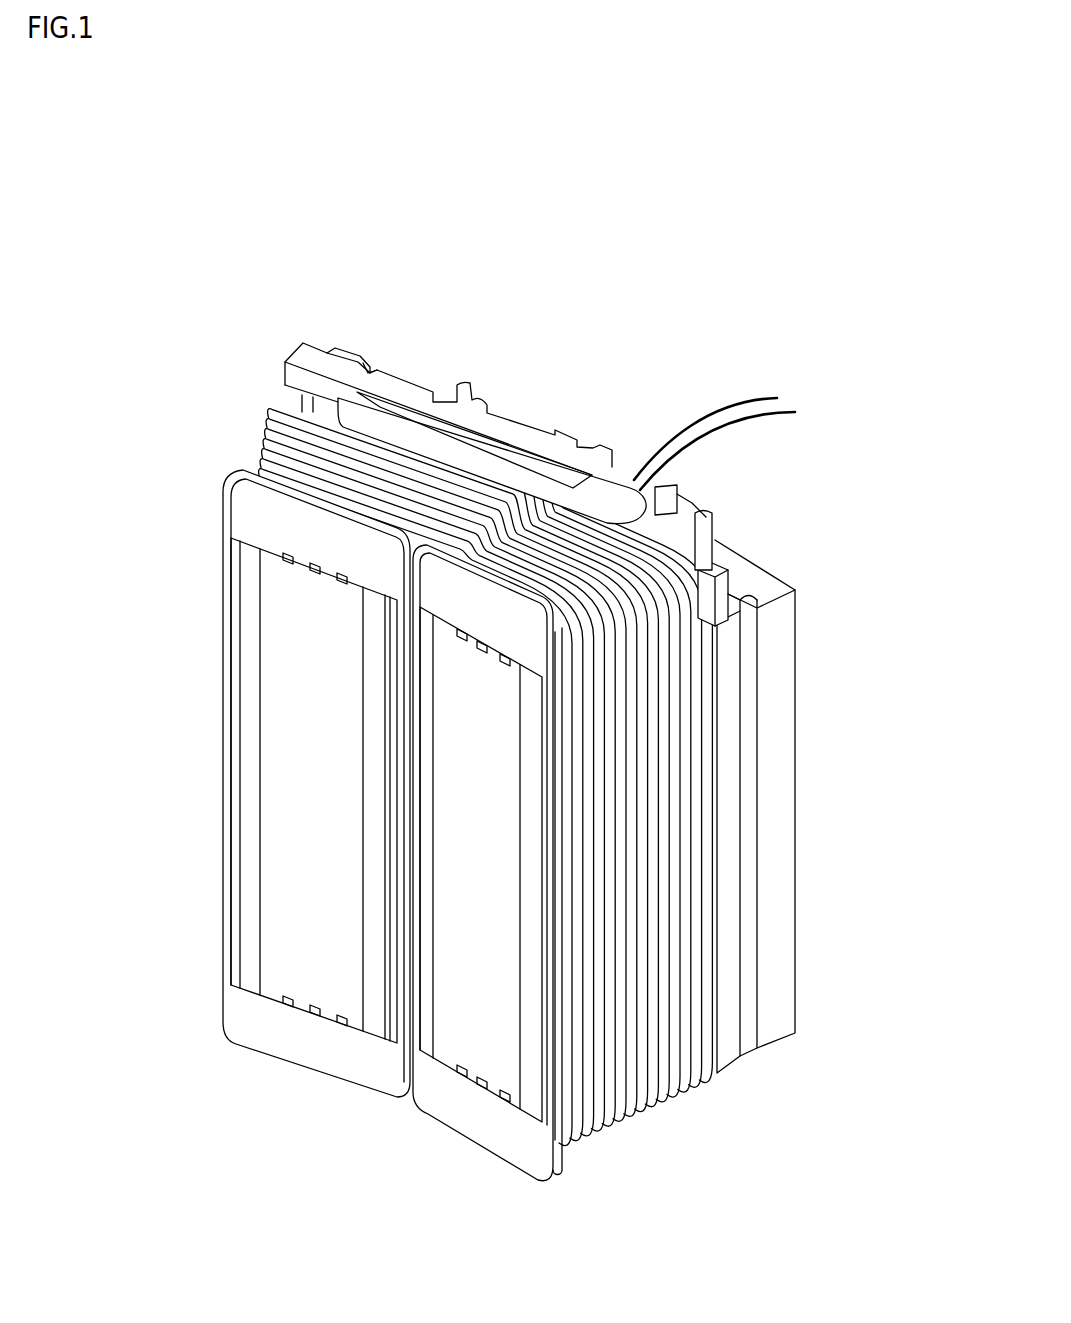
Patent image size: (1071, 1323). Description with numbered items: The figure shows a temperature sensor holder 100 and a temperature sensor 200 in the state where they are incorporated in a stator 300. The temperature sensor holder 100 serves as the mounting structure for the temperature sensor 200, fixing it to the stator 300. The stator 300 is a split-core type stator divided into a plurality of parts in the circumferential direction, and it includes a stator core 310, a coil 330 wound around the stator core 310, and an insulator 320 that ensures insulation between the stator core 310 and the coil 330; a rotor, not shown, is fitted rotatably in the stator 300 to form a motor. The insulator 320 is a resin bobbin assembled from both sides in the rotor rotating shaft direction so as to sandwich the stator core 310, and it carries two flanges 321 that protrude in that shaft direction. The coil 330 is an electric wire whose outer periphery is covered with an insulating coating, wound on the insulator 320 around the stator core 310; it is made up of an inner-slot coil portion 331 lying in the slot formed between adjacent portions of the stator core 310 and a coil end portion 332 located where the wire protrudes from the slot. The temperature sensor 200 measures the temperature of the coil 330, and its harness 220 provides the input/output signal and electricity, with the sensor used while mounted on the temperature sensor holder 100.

The temperature sensor holder 100 is at (606, 237).
The temperature sensor 200 is at (849, 237).
The harness 220 is at (724, 405).
The stator 300 is at (785, 1160).
The stator core 310 is at (780, 1003).
The insulator 320 is at (244, 507).
The flange 321 is at (342, 348).
The coil 330 is at (892, 497).
The inner-slot coil portion 331 is at (688, 677).
The coil end portion 332 is at (656, 547).